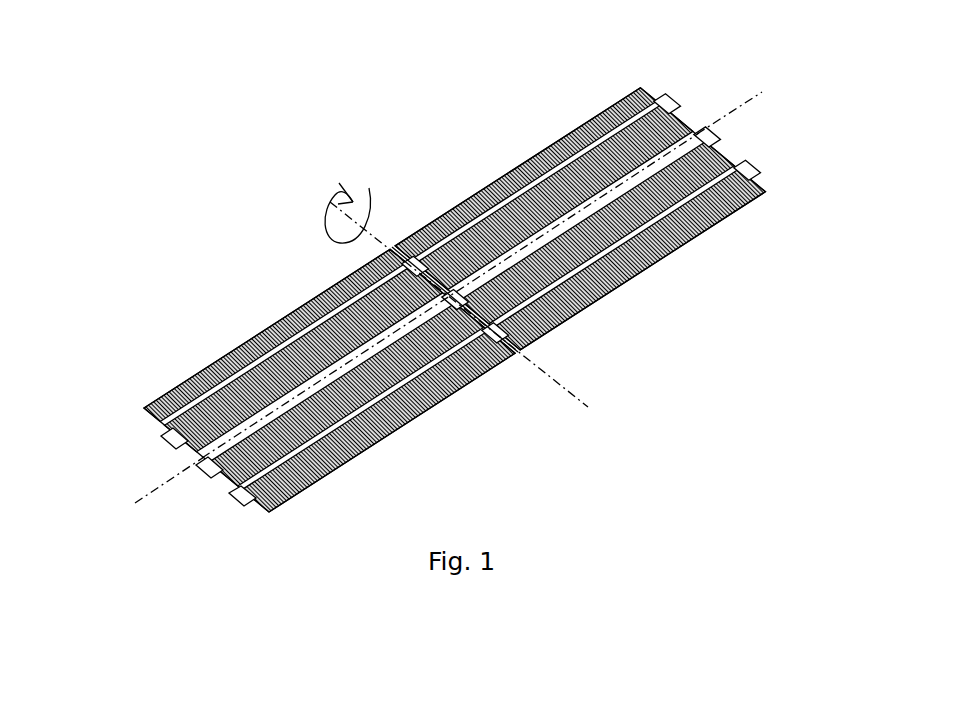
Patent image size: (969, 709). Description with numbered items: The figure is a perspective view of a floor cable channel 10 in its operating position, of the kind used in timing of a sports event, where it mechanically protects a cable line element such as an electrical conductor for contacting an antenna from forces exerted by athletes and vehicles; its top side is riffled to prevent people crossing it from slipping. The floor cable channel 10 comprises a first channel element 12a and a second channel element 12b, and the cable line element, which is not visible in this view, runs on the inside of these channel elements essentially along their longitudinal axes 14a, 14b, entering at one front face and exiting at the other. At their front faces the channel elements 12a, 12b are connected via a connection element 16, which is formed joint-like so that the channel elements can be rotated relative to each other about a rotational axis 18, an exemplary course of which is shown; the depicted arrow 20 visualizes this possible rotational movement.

The floor cable channel 10 is at (408, 265).
The first channel element 12a is at (245, 345).
The second channel element 12b is at (500, 177).
The longitudinal axis 14a is at (158, 488).
The longitudinal axis 14b is at (730, 117).
The connection element 16 is at (418, 250).
The rotational axis 18 is at (580, 398).
The arrow 20 is at (363, 187).